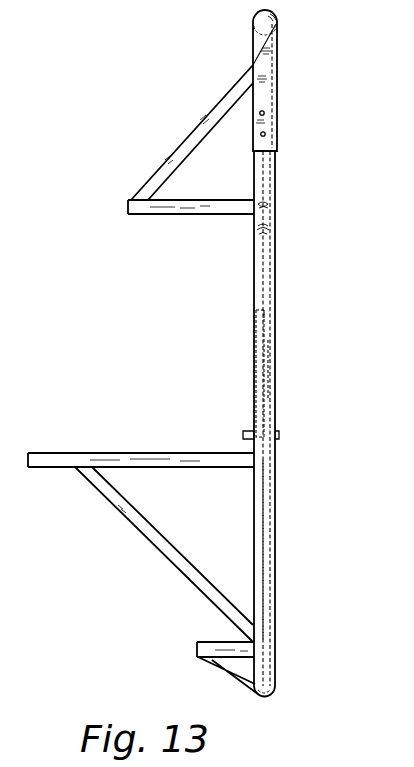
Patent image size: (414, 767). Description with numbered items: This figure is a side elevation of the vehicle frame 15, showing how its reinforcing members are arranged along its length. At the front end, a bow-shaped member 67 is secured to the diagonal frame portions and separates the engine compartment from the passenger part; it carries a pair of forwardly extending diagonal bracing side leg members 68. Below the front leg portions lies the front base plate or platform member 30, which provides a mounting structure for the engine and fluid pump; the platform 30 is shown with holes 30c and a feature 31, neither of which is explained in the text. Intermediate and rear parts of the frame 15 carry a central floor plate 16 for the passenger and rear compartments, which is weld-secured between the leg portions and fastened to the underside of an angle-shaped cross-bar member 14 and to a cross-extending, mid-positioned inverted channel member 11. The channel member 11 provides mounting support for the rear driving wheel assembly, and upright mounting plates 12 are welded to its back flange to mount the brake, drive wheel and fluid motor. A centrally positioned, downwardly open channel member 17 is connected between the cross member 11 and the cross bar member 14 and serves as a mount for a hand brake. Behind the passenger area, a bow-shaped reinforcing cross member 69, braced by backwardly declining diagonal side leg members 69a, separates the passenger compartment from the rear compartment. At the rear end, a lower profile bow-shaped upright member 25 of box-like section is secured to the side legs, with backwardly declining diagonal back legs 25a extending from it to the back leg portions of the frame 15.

The inverted channel member 11 is at (277, 405).
The mounting plate 12 is at (280, 433).
The angle-shaped cross-bar member 14 is at (256, 312).
The frame 15 is at (312, 280).
The central floor plate 16 is at (255, 355).
The downwardly open channel member 17 is at (272, 372).
The bow-shaped upright member 25 is at (197, 648).
The diagonal back leg 25a is at (218, 672).
The front base plate 30 is at (318, 103).
The holes 30c is at (266, 134).
The slot 31 is at (268, 66).
The bow-shaped member 67 is at (207, 216).
The diagonal bracing side leg member 68 is at (188, 142).
The bow-shaped reinforcing cross member 69 is at (125, 452).
The diagonal side leg member 69a is at (153, 545).